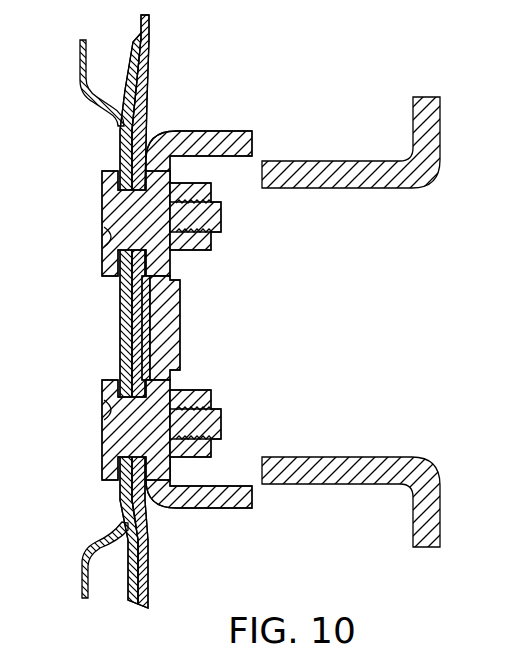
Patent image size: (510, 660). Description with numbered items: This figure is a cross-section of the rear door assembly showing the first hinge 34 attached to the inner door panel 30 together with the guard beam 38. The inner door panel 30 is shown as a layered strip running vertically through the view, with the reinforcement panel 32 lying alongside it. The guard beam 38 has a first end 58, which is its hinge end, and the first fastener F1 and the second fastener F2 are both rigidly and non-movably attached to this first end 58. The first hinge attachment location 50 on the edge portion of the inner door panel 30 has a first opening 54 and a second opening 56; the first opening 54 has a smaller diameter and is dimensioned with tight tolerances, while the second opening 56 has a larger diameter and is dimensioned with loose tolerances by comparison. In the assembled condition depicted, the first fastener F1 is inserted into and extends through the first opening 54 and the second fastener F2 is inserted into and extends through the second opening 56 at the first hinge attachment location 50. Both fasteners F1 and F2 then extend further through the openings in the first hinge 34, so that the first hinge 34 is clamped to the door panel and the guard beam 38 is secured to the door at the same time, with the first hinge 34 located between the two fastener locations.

The inner door panel 30 is at (150, 580).
The reinforcement panel 32 is at (126, 570).
The first hinge 34 is at (182, 312).
The guard beam 38 is at (78, 62).
The first hinge attachment location 50 is at (150, 516).
The first opening 54 is at (112, 232).
The second opening 56 is at (118, 411).
The first end 58 is at (119, 146).
The first fastener F1 is at (130, 223).
The second fastener F2 is at (128, 430).